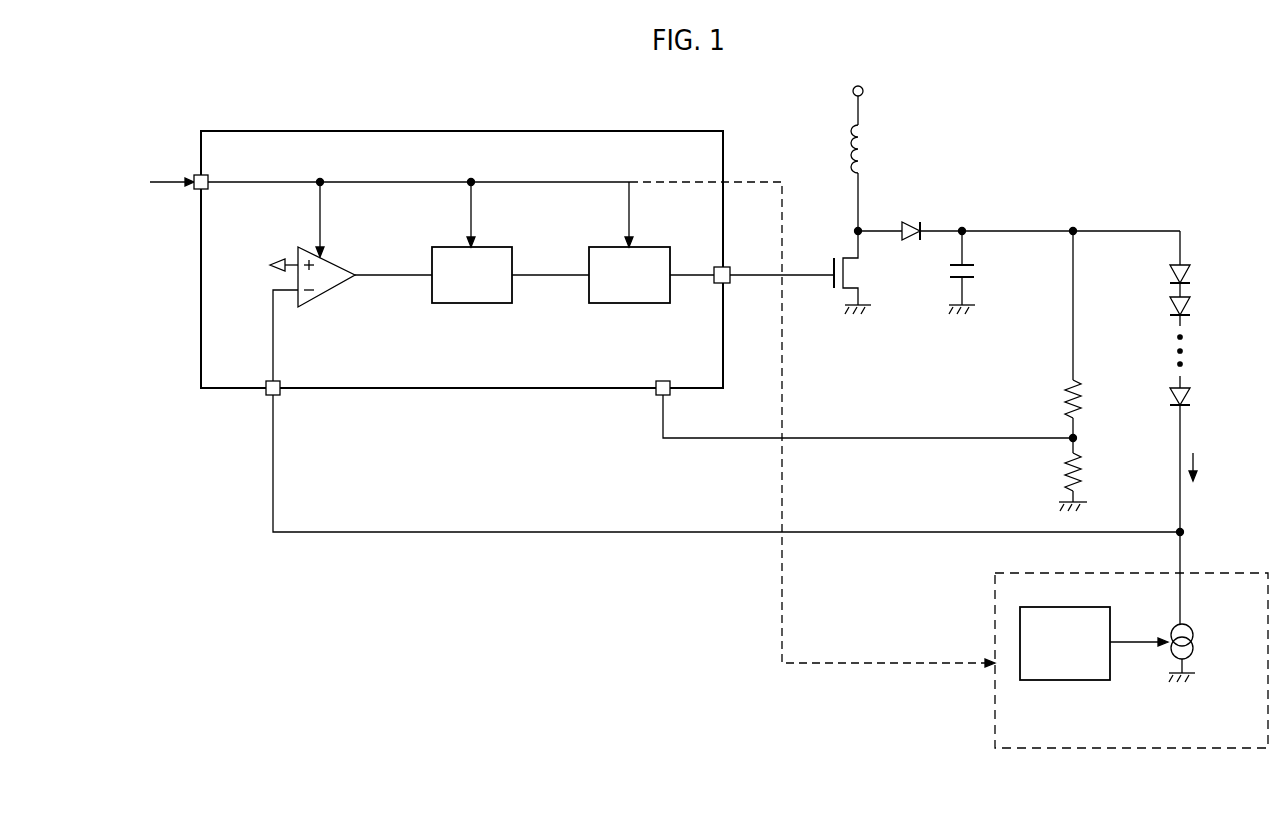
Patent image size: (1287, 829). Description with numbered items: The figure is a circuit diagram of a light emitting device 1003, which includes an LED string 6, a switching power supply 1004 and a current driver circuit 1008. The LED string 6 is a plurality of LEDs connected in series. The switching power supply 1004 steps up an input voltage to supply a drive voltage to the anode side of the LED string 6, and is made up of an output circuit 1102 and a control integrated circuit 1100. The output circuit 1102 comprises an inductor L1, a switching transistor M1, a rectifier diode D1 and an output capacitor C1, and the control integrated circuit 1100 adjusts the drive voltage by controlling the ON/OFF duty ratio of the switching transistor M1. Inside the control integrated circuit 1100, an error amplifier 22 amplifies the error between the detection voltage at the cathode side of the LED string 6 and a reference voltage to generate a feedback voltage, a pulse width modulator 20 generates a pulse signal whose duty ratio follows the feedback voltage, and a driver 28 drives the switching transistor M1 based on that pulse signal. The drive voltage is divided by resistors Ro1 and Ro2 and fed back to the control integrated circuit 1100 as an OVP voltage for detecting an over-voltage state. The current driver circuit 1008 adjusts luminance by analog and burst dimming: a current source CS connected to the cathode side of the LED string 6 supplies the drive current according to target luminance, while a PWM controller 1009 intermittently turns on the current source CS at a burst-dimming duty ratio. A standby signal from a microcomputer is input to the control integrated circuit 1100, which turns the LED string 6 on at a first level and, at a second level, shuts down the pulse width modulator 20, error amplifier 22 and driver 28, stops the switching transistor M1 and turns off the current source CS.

The light emitting device 1003 is at (628, 786).
The control integrated circuit 1100 is at (723, 357).
The error amplifier 22 is at (330, 301).
The pulse width modulator 20 is at (477, 303).
The driver 28 is at (635, 303).
The output circuit 1102 is at (928, 300).
The switching power supply 1004 is at (923, 326).
The LED string 6 is at (1195, 260).
The current driver circuit 1008 is at (1143, 748).
The PWM controller 1009 is at (1062, 680).
The inductor L1 is at (866, 145).
The rectifier diode D1 is at (912, 222).
The switching transistor M1 is at (868, 268).
The output capacitor C1 is at (990, 272).
The resistor Ro1 is at (1083, 398).
The resistor Ro2 is at (1083, 475).
The current source CS is at (1196, 640).